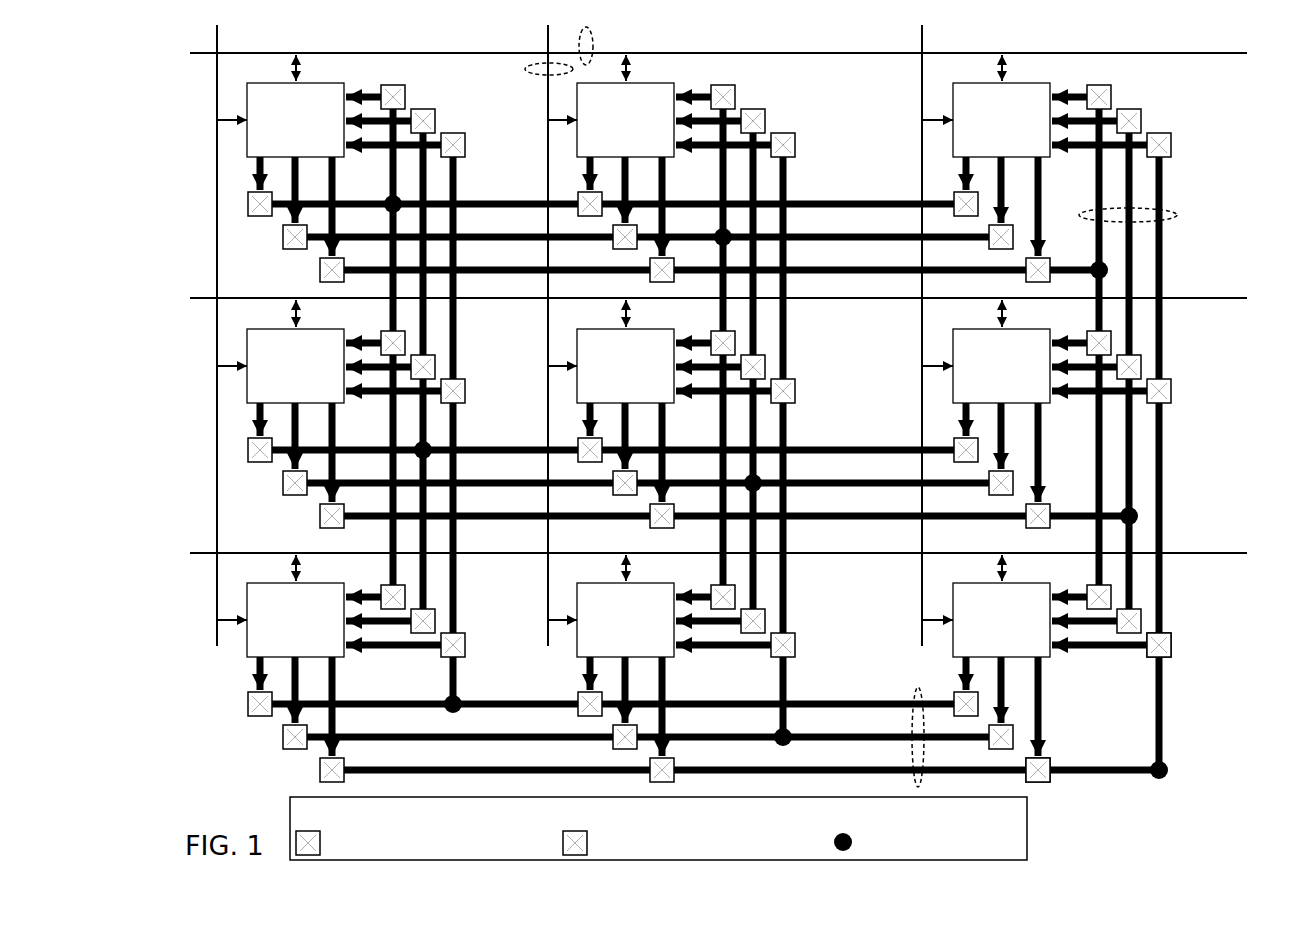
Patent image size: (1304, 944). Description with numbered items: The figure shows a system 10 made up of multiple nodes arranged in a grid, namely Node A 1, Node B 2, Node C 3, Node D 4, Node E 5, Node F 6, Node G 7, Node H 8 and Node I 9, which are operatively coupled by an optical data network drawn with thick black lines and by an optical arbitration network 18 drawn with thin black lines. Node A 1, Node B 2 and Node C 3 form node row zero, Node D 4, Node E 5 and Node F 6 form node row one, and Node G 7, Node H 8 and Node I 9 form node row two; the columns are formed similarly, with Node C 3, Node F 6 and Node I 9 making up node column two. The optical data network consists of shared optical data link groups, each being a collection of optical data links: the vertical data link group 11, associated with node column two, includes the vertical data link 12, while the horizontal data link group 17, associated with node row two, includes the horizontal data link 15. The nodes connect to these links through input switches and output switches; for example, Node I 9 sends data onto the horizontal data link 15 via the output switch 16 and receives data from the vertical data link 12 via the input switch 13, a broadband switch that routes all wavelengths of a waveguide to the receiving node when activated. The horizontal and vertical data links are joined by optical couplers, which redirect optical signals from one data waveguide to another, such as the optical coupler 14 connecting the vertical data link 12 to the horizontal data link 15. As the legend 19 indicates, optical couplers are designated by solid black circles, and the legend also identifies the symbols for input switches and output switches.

The Node A 1 is at (290, 141).
The Node B 2 is at (620, 141).
The Node C 3 is at (996, 141).
The Node D 4 is at (290, 387).
The Node E 5 is at (620, 387).
The Node F 6 is at (996, 387).
The Node G 7 is at (290, 641).
The Node H 8 is at (620, 641).
The Node I 9 is at (996, 641).
The system 10 is at (250, 765).
The vertical data link group 11 is at (1181, 433).
The vertical data link 12 is at (1183, 185).
The input switch 13 is at (1167, 634).
The optical coupler 14 is at (1164, 762).
The horizontal data link 15 is at (1059, 774).
The output switch 16 is at (1048, 759).
The horizontal data link group 17 is at (740, 722).
The optical arbitration network 18 is at (525, 94).
The legend 19 is at (698, 823).